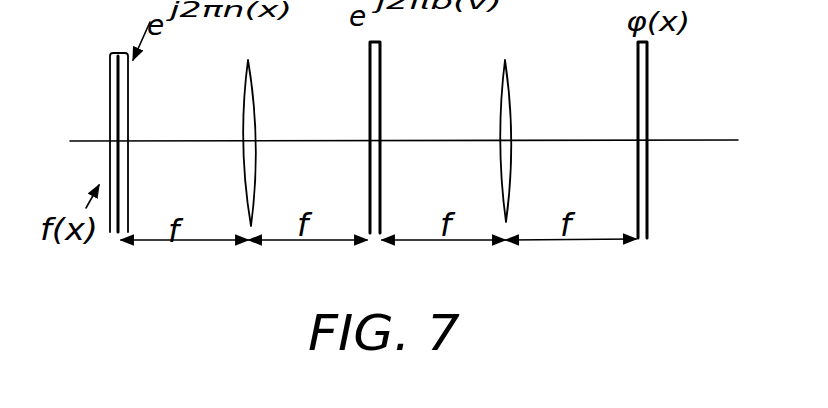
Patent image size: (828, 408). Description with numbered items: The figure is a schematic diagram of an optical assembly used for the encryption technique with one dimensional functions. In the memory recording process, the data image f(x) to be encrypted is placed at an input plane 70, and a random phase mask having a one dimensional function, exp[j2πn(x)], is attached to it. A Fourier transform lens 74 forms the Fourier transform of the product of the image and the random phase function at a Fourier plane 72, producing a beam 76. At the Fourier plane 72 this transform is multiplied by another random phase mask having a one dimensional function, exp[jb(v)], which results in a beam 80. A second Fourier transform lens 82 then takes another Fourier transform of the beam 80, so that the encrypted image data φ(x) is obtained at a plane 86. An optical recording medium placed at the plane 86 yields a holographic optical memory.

The input plane 70 is at (115, 158).
The Fourier plane 72 is at (381, 100).
The Fourier transform lens 74 is at (284, 100).
The beam 76 is at (276, 141).
The beam 80 is at (408, 141).
The Fourier transform lens 82 is at (512, 98).
The plane 86 is at (648, 128).